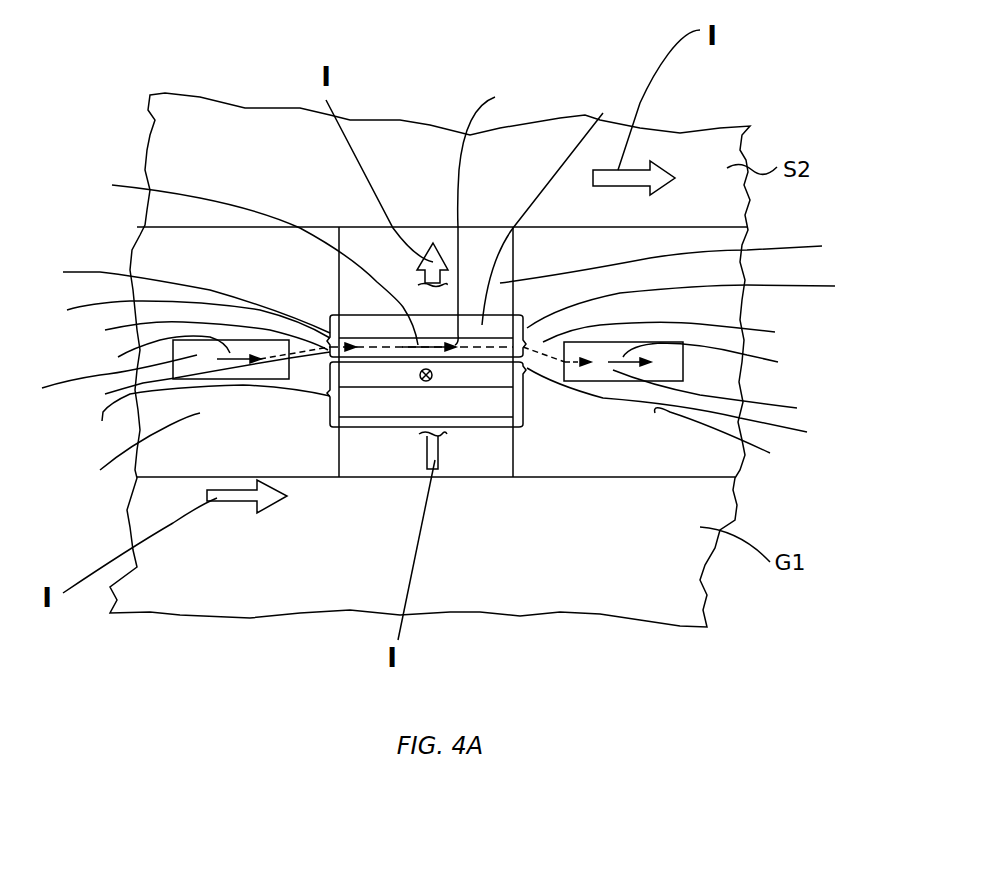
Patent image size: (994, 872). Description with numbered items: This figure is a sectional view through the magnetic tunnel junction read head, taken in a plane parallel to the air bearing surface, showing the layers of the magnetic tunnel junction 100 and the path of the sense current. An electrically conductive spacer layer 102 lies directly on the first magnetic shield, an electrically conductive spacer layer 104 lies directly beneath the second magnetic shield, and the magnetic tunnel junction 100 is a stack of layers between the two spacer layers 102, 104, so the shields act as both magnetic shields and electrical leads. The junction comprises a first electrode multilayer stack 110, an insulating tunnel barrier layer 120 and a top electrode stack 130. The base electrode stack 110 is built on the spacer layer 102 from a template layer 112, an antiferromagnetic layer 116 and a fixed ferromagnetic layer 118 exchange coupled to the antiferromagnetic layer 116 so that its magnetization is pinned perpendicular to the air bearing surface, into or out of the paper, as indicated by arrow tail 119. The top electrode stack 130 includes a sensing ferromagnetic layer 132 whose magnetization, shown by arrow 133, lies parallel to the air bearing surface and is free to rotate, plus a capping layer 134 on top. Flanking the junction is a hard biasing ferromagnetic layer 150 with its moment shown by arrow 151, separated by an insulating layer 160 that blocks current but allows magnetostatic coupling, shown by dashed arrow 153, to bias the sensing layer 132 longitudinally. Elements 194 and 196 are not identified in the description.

The magnetic tunnel junction 100 is at (687, 408).
The electrically conductive spacer layer 102 is at (472, 504).
The electrically conductive spacer layer 104 is at (498, 255).
The first electrode multilayer stack 110 is at (201, 416).
The template layer 112 is at (497, 423).
The antiferromagnetic layer 116 is at (465, 405).
The fixed ferromagnetic layer 118 is at (385, 377).
The arrow tail 119 is at (423, 382).
The insulating tunnel barrier layer 120 is at (196, 381).
The top electrode stack 130 is at (180, 319).
The sensing ferromagnetic layer 132 is at (497, 215).
The arrow 133 is at (245, 259).
The capping layer 134 is at (556, 205).
The biasing ferromagnetic layer 150 is at (417, 389).
The arrow 151 is at (446, 356).
The dashed arrow 153 is at (440, 335).
The insulating layer 160 is at (437, 448).
The upper gap line 194 is at (179, 296).
The upper flux line 196 is at (703, 301).